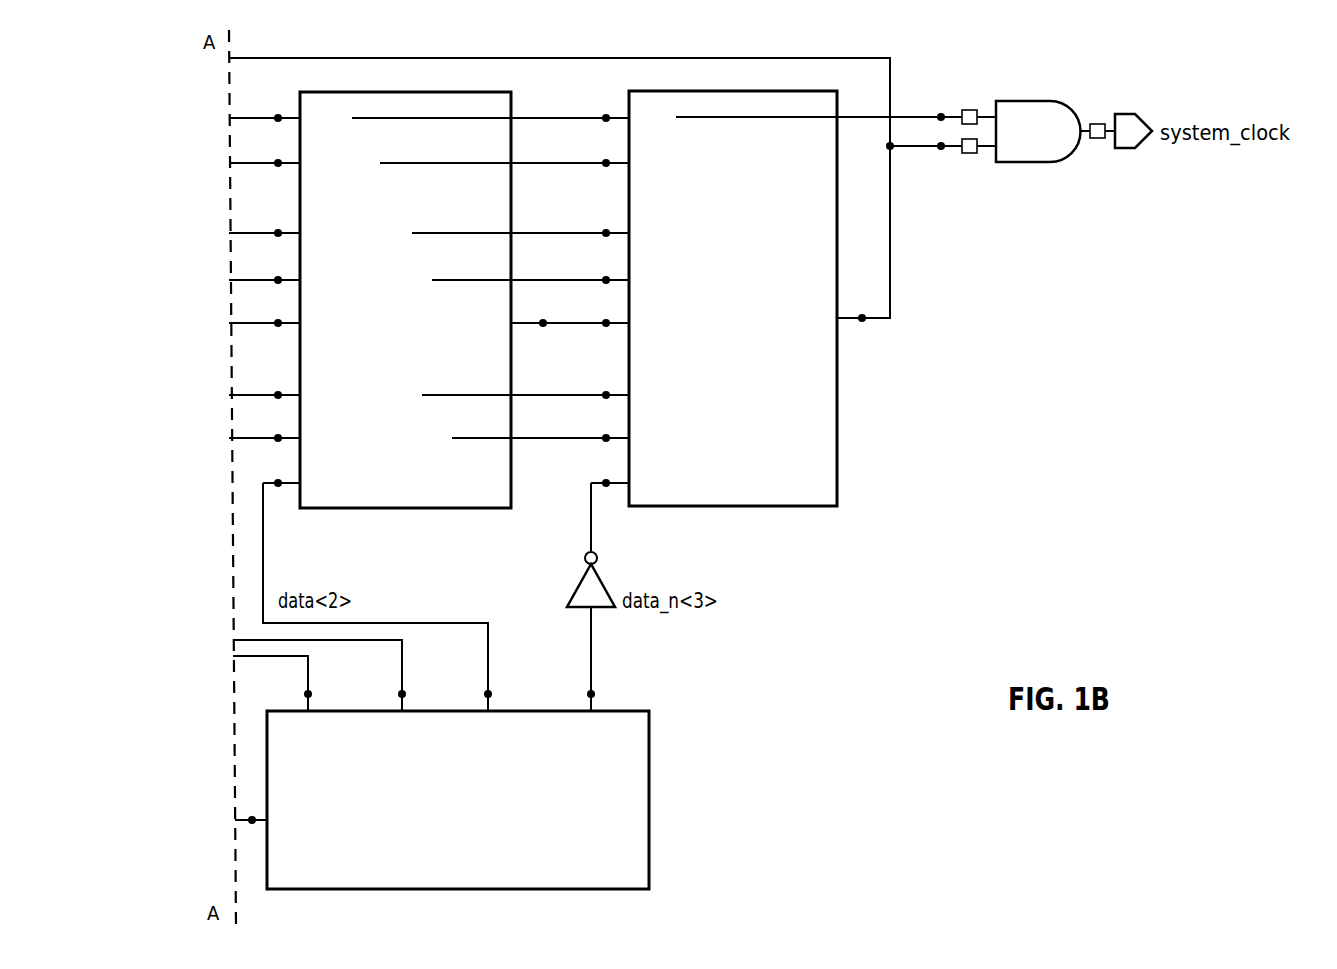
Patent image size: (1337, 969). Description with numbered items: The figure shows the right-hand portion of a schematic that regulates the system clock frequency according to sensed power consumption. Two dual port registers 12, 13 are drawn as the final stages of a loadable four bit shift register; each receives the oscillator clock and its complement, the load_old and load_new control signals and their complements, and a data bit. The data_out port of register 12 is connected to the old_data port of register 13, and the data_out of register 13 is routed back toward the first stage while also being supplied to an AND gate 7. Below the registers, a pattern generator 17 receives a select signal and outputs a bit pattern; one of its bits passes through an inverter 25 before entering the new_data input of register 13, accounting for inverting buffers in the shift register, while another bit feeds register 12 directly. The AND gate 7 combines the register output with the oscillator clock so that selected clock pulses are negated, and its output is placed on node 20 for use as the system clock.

The dual port register 12 is at (452, 207).
The dual port register 13 is at (780, 207).
The pattern generator 17 is at (627, 711).
The AND gate 7 is at (1040, 143).
The node 20 is at (1128, 150).
The inverter 25 is at (578, 589).